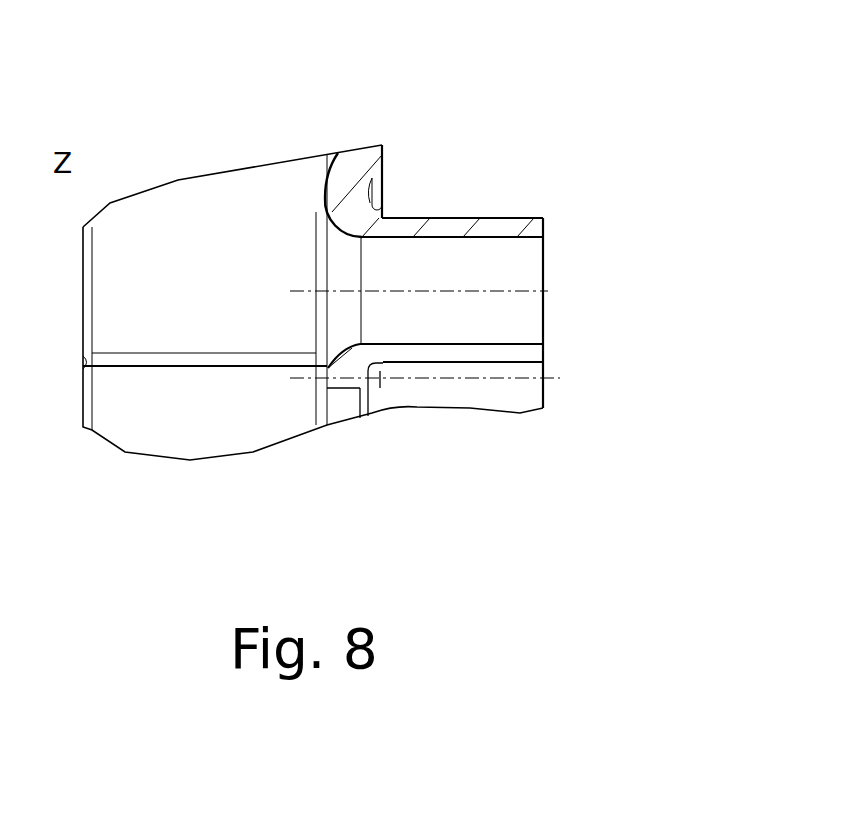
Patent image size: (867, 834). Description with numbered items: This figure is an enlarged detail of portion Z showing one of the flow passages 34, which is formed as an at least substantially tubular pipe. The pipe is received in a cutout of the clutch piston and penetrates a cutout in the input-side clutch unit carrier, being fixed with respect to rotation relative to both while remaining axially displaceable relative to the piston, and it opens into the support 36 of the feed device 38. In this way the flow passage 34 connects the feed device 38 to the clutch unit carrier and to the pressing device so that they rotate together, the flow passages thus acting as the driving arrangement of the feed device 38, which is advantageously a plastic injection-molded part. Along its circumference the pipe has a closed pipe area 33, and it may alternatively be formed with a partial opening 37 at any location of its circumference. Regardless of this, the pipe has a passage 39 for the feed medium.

The closed pipe area 33 is at (492, 230).
The flow passage 34 is at (517, 235).
The support 36 is at (350, 170).
The partial opening 37 is at (482, 350).
The feed device 38 is at (413, 186).
The passage 39 is at (480, 272).